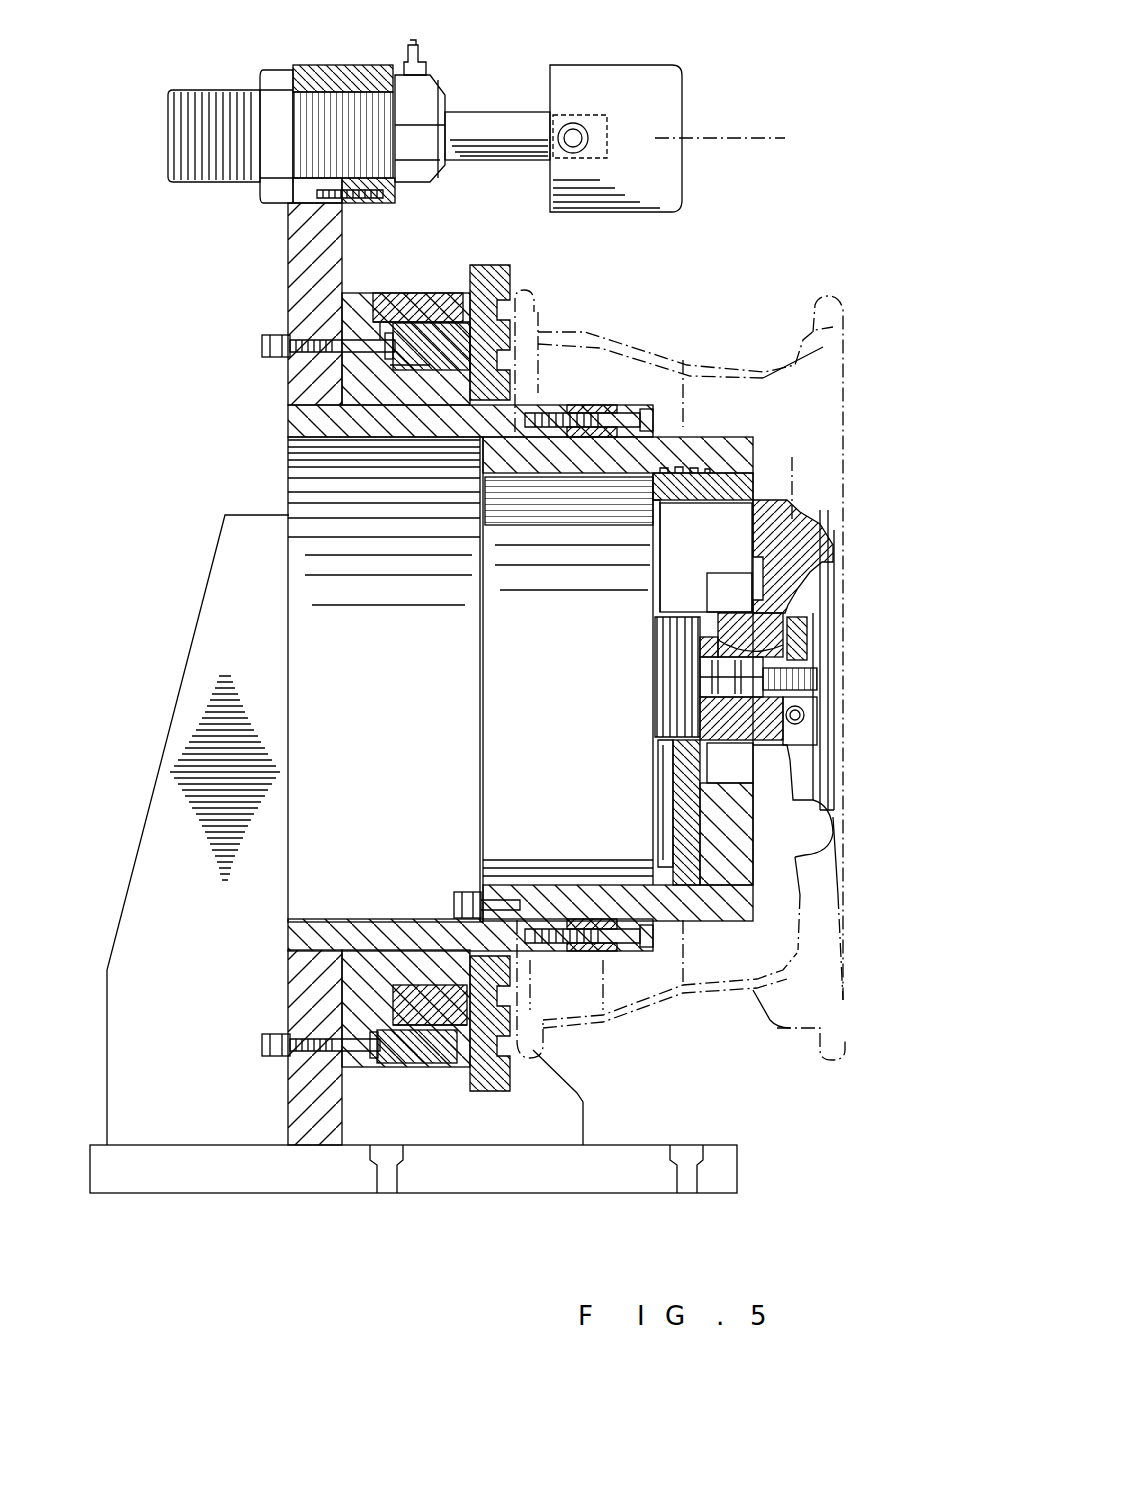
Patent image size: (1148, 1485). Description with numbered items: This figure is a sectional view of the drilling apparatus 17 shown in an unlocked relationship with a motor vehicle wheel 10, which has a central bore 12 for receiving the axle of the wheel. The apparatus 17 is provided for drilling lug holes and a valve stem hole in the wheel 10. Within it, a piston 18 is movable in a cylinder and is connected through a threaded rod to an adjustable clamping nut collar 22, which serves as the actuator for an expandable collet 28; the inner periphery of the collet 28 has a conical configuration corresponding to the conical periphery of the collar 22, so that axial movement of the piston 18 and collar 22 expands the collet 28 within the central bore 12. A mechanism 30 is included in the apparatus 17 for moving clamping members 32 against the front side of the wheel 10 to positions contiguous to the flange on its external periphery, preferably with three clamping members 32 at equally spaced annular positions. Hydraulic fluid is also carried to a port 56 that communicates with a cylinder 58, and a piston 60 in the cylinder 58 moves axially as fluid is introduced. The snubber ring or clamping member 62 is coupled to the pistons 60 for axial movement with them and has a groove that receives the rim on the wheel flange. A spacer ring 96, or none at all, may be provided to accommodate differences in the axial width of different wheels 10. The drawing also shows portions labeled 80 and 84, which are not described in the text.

The motor vehicle wheel 10 is at (838, 343).
The central bore 12 is at (790, 635).
The apparatus 17 is at (266, 323).
The piston 18 is at (690, 687).
The adjustable clamping nut collar 22 is at (783, 630).
The expandable collet 28 is at (773, 732).
The mechanism 30 is at (455, 87).
The clamping members 32 is at (670, 180).
The port 56 is at (255, 1045).
The cylinder 58 is at (445, 332).
The piston 60 is at (430, 1020).
The snubber ring or clamping member 62 is at (508, 268).
The hub flange 80 is at (733, 440).
The housing block 84 is at (753, 522).
The spacer ring 96 is at (582, 400).